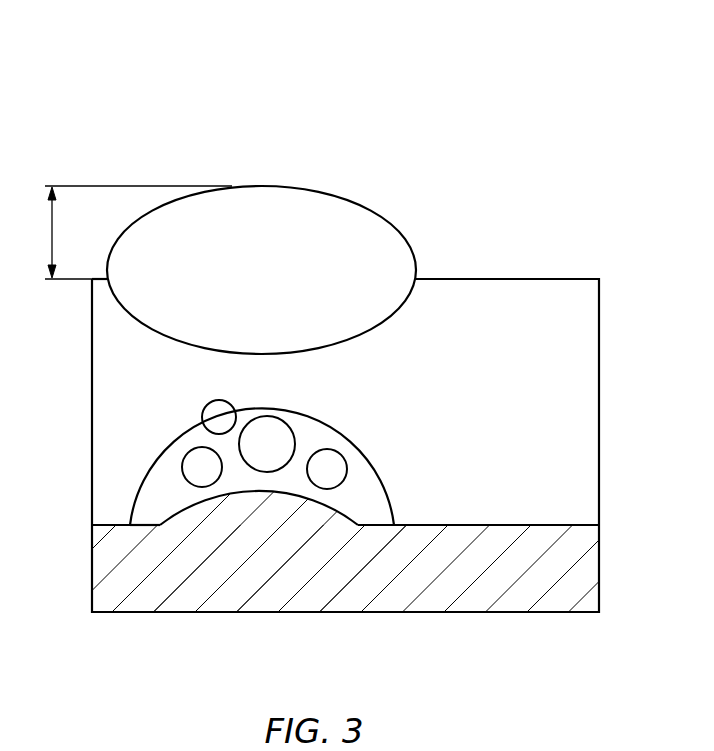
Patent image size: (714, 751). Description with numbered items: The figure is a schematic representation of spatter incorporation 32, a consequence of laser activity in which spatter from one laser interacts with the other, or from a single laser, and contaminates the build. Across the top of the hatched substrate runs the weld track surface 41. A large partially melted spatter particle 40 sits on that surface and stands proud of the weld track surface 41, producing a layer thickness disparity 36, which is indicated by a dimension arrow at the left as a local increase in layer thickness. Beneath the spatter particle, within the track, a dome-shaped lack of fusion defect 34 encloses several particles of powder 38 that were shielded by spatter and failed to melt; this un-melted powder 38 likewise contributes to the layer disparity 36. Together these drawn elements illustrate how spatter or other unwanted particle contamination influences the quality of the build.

The spatter incorporation 32 is at (580, 103).
The lack of fusion defect 34 is at (147, 410).
The layer thickness disparity 36 is at (134, 232).
The particle or powder 38 is at (190, 467).
The partially melted spatter particle 40 is at (277, 287).
The weld track surface 41 is at (516, 278).